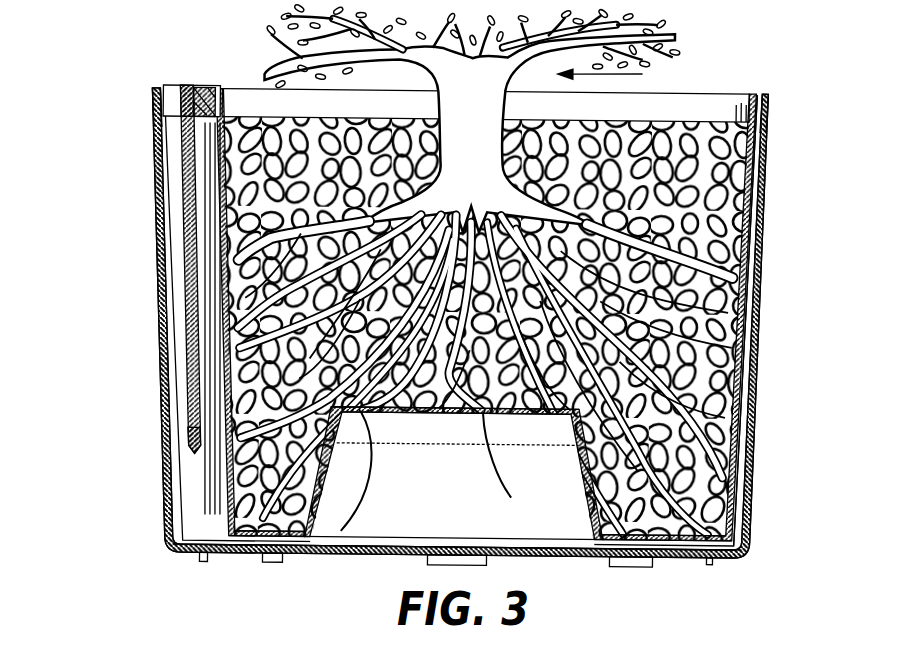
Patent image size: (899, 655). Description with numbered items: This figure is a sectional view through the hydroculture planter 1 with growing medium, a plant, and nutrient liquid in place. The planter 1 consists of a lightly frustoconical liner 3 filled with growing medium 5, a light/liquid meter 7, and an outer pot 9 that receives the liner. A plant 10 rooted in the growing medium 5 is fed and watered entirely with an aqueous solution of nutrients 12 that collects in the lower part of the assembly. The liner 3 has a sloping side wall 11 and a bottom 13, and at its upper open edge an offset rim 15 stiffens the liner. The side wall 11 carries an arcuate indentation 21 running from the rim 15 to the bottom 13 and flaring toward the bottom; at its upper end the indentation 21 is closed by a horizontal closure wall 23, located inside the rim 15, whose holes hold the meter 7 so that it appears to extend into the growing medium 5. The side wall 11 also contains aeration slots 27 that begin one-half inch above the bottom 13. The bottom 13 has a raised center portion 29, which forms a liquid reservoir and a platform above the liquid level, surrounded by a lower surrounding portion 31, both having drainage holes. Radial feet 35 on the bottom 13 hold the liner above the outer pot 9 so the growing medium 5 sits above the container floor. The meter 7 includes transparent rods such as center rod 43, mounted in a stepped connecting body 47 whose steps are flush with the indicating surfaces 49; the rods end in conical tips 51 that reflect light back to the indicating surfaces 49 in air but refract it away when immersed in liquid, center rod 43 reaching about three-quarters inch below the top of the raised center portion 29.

The hydroculture planter 1 is at (120, 187).
The liner 3 is at (695, 106).
The growing medium 5 is at (668, 171).
The light/liquid meter 7 is at (182, 240).
The outer pot 9 is at (145, 320).
The plant 10 is at (617, 76).
The side wall 11 is at (750, 230).
The aqueous solution of nutrients 12 is at (514, 502).
The bottom 13 is at (731, 485).
The offset rim 15 is at (154, 90).
The arcuate indentation 21 is at (207, 480).
The closure wall 23 is at (207, 90).
The aeration slots 27 is at (742, 350).
The raised center portion 29 is at (432, 406).
The lower surrounding portion 31 is at (735, 517).
The radial feet 35 is at (265, 550).
The center light transmitting rod 43 is at (197, 371).
The connecting body 47 is at (199, 90).
The indicating surfaces 49 is at (182, 90).
The conical tips 51 is at (201, 451).